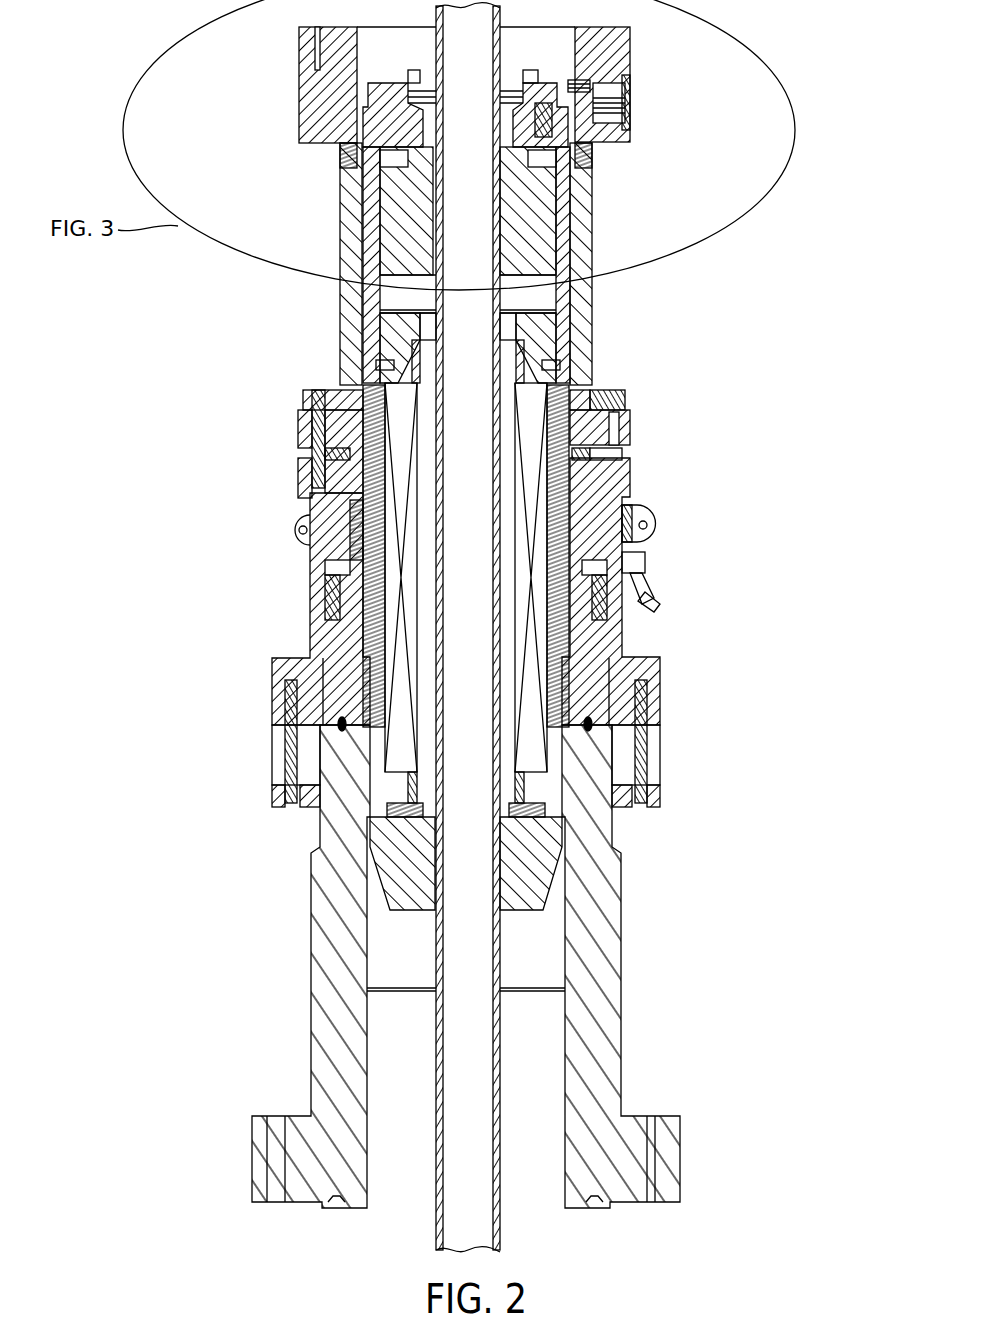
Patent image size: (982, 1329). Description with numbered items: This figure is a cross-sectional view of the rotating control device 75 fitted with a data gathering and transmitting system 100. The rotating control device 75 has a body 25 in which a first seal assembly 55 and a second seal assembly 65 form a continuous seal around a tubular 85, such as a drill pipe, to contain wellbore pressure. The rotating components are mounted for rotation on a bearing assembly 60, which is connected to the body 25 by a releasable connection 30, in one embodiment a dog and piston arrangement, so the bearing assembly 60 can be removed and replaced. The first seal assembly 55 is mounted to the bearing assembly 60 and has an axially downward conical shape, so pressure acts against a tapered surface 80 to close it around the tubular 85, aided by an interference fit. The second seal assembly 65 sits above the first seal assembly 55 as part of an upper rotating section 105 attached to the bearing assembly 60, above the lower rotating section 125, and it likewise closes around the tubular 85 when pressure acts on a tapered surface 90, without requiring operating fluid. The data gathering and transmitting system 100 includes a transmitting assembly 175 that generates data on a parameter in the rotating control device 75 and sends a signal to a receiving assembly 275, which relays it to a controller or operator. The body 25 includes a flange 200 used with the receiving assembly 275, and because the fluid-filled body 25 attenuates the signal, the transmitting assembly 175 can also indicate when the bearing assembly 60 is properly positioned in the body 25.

The body 25 is at (583, 194).
The releasable connection 30 is at (617, 601).
The first seal assembly 55 is at (538, 849).
The bearing assembly 60 is at (567, 499).
The second seal assembly 65 is at (535, 213).
The rotating control device 75 is at (665, 535).
The tapered surface 80 is at (387, 907).
The tubular 85 is at (503, 17).
The tapered surface 90 is at (393, 273).
The data gathering and transmitting system 100 is at (638, 110).
The upper rotating section 105 is at (560, 267).
The lower rotating section 125 is at (528, 802).
The transmitting assembly 175 is at (603, 37).
The flange 200 is at (317, 91).
The receiving assembly 275 is at (634, 72).